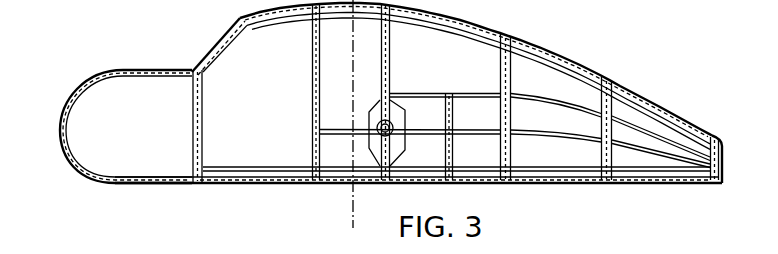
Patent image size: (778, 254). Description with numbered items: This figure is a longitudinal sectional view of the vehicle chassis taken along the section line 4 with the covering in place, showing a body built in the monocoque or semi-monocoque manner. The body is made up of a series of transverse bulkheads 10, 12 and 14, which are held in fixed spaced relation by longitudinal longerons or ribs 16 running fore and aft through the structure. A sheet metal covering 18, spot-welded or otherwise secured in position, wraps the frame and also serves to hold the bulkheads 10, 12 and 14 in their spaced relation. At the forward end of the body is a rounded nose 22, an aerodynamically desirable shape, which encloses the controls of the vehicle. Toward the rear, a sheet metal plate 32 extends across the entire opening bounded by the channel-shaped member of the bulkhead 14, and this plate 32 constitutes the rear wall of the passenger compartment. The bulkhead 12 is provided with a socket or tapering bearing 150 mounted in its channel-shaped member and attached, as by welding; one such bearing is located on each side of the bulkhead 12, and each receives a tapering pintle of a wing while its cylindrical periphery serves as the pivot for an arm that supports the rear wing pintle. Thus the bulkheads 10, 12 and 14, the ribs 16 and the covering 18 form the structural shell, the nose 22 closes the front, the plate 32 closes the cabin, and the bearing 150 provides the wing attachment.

The section line 4- 4 is at (342, 207).
The bulkhead 10 is at (311, 66).
The bulkhead 12 is at (392, 63).
The bulkhead 14 is at (501, 76).
The longeron or rib 16 is at (348, 20).
The sheet metal covering 18 is at (437, 16).
The nose 22 is at (77, 99).
The sheet metal plate 32 is at (512, 152).
The socket or tapering bearing 150 is at (379, 120).